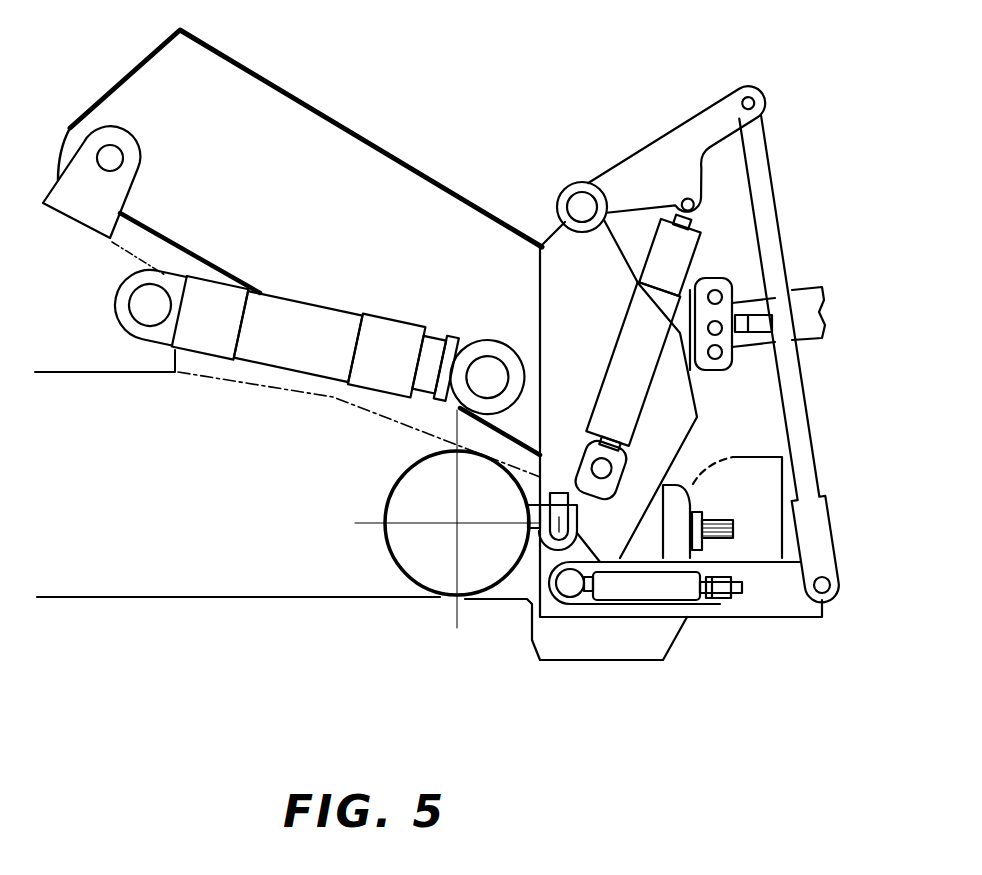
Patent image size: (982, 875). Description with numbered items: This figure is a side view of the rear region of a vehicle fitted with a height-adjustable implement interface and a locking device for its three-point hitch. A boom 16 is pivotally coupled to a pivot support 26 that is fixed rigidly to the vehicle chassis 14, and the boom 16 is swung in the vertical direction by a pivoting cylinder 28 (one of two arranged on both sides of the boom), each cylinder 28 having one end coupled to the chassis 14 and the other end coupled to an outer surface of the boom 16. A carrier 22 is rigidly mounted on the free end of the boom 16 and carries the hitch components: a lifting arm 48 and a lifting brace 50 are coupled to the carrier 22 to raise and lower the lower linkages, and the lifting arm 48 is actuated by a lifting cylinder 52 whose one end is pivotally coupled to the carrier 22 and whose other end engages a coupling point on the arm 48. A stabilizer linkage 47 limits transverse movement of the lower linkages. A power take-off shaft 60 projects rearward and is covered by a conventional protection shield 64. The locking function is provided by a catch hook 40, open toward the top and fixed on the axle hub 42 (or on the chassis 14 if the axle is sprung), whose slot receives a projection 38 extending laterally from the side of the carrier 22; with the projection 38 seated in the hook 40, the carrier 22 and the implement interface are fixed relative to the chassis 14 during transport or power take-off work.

The chassis 14 is at (150, 578).
The boom 16 is at (287, 93).
The carrier 22 is at (570, 297).
The pivot support 26 is at (109, 152).
The pivoting cylinder 28 is at (293, 333).
The projection 38 is at (560, 528).
The catch hook 40 is at (540, 537).
The axle hub 42 is at (403, 582).
The stabilizer linkage 47 is at (662, 588).
The lifting arm 48 is at (653, 165).
The lifting brace 50 is at (762, 170).
The lifting cylinder 52 is at (648, 328).
The power take-off shaft 60 is at (733, 538).
The power take-off shaft protection shield 64 is at (808, 600).